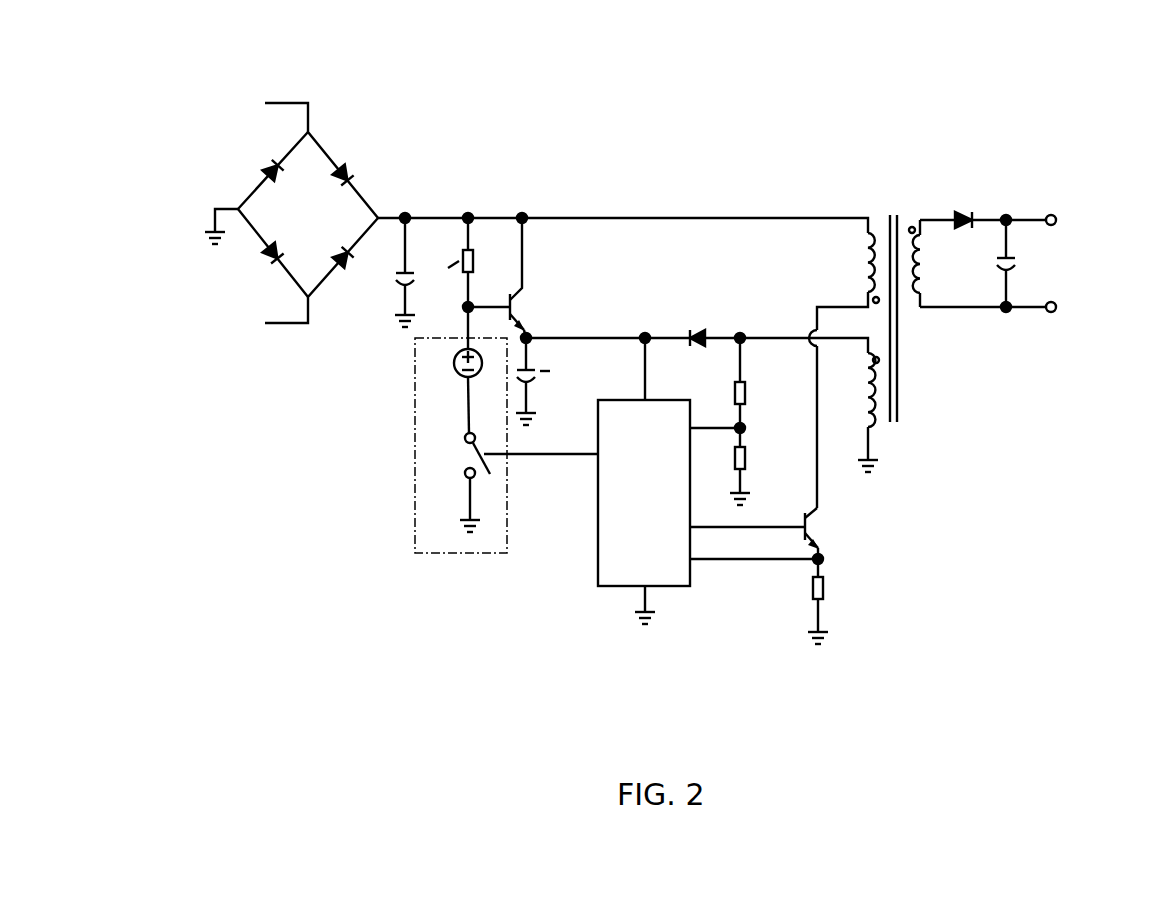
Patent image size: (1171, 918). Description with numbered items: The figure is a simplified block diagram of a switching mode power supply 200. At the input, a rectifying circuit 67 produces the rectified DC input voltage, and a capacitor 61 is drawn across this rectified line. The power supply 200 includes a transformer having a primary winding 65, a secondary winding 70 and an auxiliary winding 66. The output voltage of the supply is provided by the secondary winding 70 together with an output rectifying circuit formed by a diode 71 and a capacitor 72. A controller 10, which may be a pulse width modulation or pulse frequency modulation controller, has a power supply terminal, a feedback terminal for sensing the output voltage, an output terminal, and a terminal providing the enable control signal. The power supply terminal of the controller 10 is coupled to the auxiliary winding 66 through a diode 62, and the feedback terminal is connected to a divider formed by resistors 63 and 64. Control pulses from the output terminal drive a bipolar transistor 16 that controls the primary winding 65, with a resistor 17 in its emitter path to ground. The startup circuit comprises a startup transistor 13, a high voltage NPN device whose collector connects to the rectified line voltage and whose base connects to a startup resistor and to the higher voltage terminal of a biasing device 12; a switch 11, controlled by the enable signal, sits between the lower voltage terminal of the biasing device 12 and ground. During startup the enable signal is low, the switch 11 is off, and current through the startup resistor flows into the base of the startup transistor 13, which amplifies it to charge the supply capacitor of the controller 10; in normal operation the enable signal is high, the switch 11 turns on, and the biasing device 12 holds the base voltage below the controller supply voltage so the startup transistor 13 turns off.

The switching mode power supply 200 is at (1036, 84).
The rectifying circuit 67 is at (291, 213).
The input capacitor 61 is at (392, 281).
The startup transistor 13 is at (533, 300).
The biasing device 12 is at (453, 367).
The switch 11 is at (460, 458).
The controller 10 is at (591, 566).
The diode 62 is at (708, 314).
The feedback resistor 63 is at (749, 391).
The feedback resistor 64 is at (751, 452).
The primary winding 65 is at (862, 258).
The auxiliary winding 66 is at (862, 390).
The bipolar transistor 16 is at (821, 526).
The current sense resistor 17 is at (833, 587).
The secondary winding 70 is at (925, 272).
The diode 71 is at (967, 202).
The capacitor 72 is at (1022, 262).